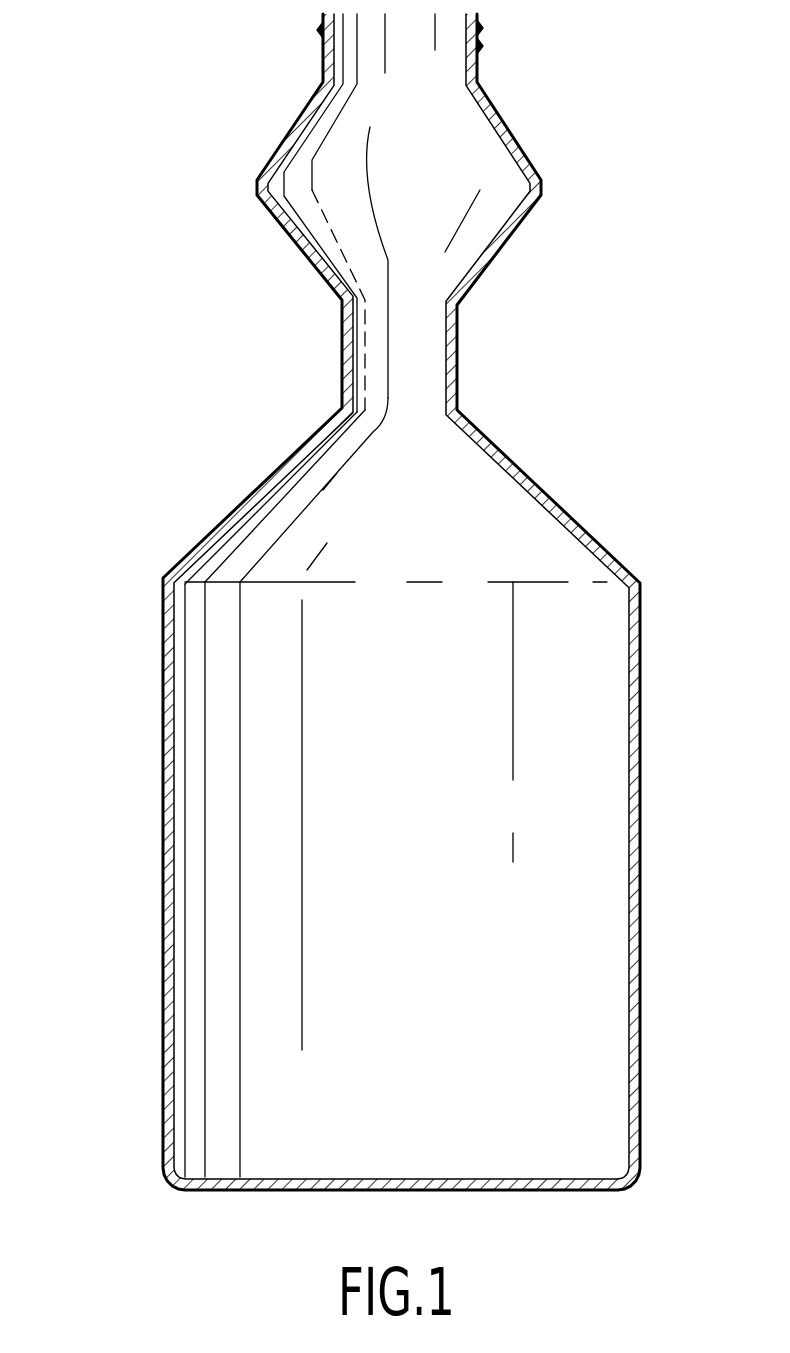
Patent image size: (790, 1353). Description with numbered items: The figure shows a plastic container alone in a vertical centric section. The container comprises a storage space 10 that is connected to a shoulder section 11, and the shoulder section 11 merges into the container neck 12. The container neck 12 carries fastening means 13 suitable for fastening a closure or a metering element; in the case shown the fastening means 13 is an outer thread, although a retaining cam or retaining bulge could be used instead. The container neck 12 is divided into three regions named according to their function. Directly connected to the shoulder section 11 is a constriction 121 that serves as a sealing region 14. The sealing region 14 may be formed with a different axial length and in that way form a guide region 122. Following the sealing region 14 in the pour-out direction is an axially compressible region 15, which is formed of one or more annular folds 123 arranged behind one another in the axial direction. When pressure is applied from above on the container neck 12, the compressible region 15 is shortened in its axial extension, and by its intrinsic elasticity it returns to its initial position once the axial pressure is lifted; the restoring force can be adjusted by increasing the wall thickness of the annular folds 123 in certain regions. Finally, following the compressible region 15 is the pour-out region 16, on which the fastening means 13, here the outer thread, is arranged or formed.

The storage space 10 is at (175, 1190).
The shoulder section 11 is at (337, 405).
The container neck 12 is at (318, 14).
The fastening means 13 is at (322, 40).
The sealing region 14 is at (463, 405).
The axially compressible region 15 is at (463, 305).
The pour-out region 16 is at (484, 14).
The constriction 121 is at (342, 352).
The guide region 122 is at (458, 358).
The annular folds 123 is at (262, 230).